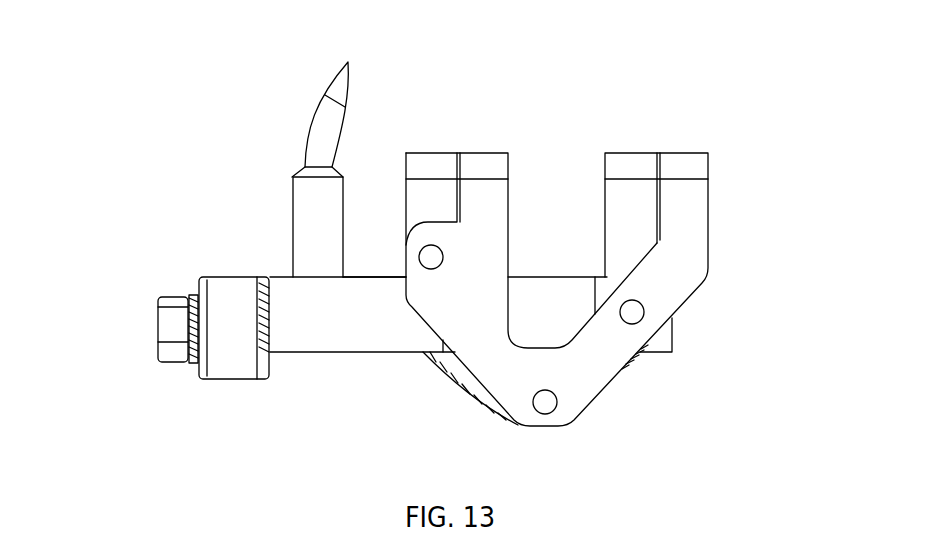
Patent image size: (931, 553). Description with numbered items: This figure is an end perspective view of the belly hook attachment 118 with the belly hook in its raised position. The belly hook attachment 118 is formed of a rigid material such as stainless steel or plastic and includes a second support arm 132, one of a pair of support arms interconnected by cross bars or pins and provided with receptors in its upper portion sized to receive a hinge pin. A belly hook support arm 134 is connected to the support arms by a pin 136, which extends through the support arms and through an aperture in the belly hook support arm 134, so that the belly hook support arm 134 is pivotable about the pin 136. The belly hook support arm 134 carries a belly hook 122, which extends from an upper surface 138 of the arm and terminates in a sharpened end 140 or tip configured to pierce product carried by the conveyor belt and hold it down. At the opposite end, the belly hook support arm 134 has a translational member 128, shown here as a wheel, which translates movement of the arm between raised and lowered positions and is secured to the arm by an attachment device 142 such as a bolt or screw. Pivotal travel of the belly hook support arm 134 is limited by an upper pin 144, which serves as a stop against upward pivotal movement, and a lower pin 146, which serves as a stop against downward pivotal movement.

The belly hook attachment 118 is at (719, 99).
The belly hook 122 is at (313, 148).
The translational member 128 is at (217, 372).
The second support arm 132 is at (603, 365).
The belly hook support arm 134 is at (405, 338).
The pin 136 is at (640, 312).
The upper surface 138 is at (373, 276).
The sharpened end 140 is at (335, 75).
The attachment device 142 is at (170, 325).
The upper pin 144 is at (440, 255).
The lower pin 146 is at (544, 404).